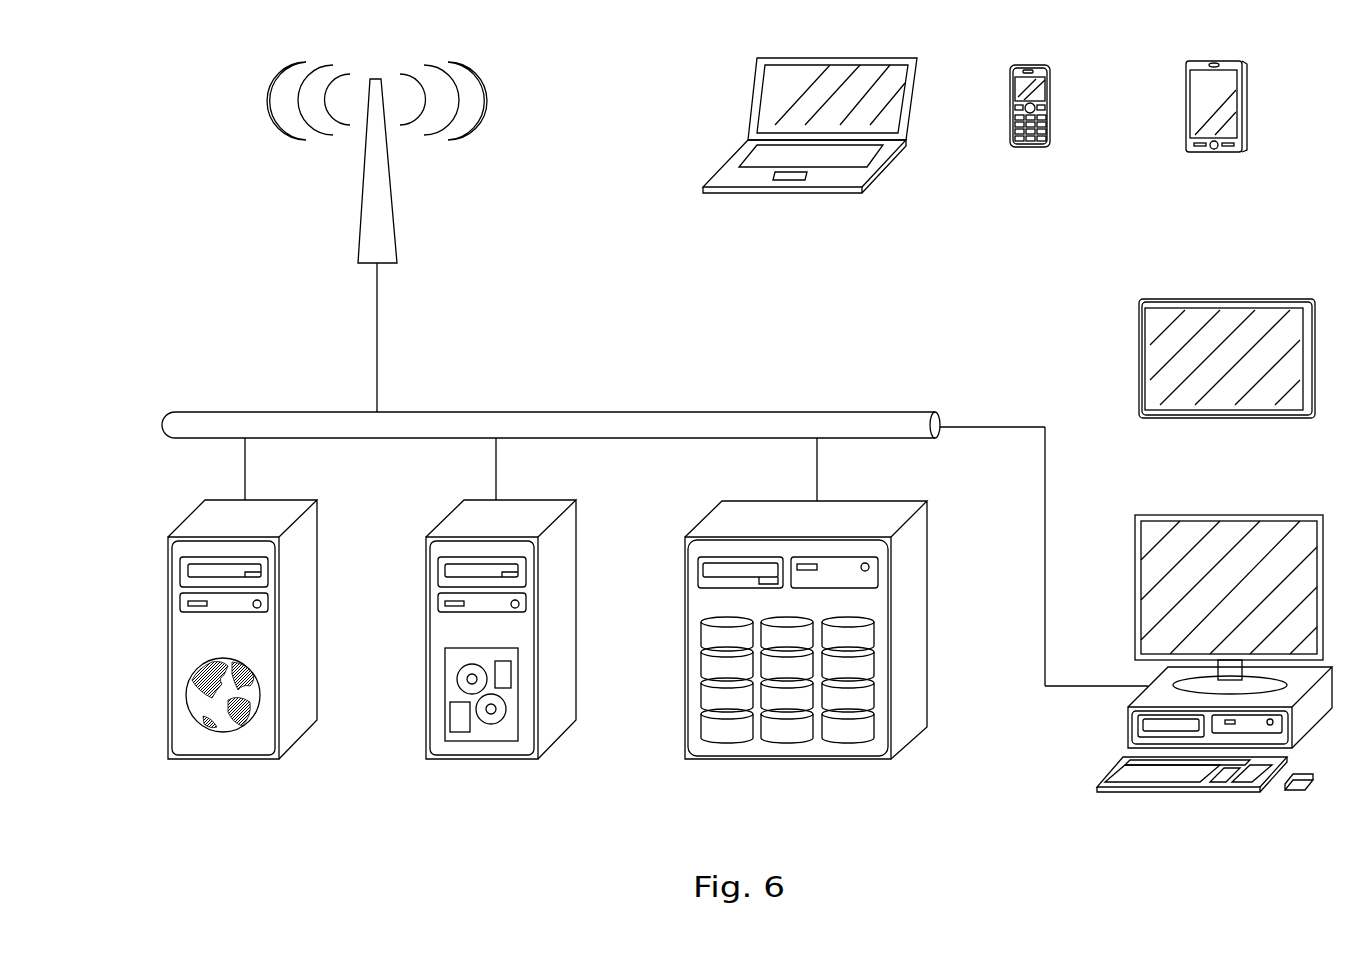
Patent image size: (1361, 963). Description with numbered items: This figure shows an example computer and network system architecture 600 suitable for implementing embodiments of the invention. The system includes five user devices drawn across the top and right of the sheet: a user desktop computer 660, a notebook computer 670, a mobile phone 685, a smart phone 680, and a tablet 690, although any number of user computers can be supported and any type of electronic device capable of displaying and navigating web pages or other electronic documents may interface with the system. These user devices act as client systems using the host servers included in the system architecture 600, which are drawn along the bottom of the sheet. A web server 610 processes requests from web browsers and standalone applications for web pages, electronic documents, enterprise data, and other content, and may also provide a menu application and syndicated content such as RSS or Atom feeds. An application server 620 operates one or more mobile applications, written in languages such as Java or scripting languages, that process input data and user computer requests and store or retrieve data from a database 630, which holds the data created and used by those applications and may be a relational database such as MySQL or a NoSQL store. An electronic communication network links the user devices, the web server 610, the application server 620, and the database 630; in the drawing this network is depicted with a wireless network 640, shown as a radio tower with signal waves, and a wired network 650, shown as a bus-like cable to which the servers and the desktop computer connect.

The computer and network system architecture 600 is at (241, 94).
The web server 610 is at (232, 752).
The application server 620 is at (502, 788).
The database 630 is at (777, 738).
The wireless network 640 is at (655, 533).
The wired network 650 is at (402, 169).
The user desktop computer 660 is at (1210, 800).
The notebook computer 670 is at (800, 200).
The smart phone 680 is at (1220, 165).
The mobile phone 685 is at (1035, 165).
The tablet 690 is at (1222, 425).